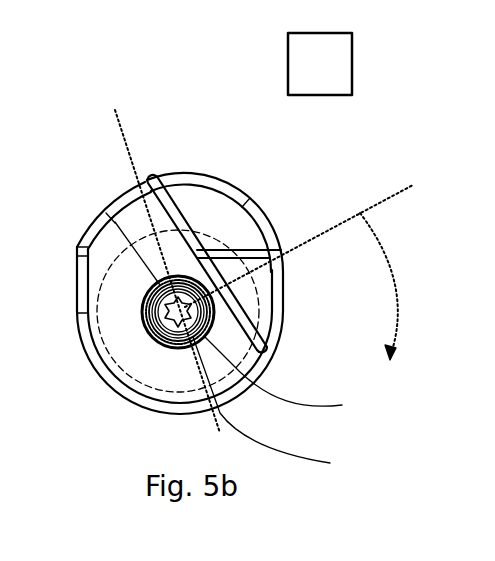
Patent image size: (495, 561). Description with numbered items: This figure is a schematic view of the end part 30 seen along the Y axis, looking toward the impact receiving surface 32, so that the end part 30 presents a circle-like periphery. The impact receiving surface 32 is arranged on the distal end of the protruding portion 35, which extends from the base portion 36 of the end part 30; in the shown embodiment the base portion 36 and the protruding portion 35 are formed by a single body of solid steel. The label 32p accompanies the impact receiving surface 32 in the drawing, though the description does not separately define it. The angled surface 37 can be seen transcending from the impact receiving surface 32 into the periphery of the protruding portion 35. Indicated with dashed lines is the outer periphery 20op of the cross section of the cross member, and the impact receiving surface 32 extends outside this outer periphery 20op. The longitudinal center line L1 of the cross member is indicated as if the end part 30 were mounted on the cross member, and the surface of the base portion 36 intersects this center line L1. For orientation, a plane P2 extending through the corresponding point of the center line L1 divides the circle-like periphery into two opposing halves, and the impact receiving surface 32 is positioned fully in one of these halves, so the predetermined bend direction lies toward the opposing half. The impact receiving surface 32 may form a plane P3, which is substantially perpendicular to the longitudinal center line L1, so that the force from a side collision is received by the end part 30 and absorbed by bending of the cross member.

The end part 30 is at (97, 370).
The base portion 36 is at (120, 278).
The impact receiving surface 32 is at (220, 215).
The slot of plate 32p is at (207, 263).
The angled surface 37 is at (257, 292).
The protruding portion 35 is at (283, 233).
The plane P2 is at (122, 134).
The plane P3 is at (352, 51).
The longitudinal center line L1 is at (285, 376).
The outer periphery 20op is at (282, 405).